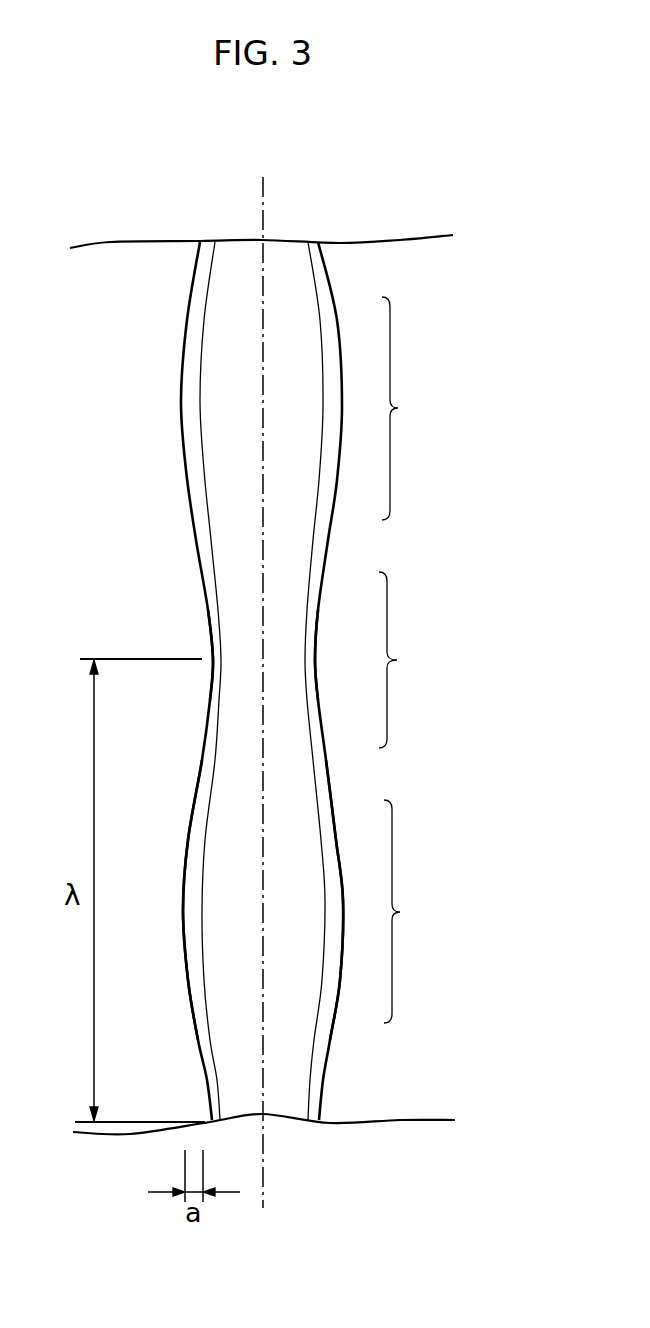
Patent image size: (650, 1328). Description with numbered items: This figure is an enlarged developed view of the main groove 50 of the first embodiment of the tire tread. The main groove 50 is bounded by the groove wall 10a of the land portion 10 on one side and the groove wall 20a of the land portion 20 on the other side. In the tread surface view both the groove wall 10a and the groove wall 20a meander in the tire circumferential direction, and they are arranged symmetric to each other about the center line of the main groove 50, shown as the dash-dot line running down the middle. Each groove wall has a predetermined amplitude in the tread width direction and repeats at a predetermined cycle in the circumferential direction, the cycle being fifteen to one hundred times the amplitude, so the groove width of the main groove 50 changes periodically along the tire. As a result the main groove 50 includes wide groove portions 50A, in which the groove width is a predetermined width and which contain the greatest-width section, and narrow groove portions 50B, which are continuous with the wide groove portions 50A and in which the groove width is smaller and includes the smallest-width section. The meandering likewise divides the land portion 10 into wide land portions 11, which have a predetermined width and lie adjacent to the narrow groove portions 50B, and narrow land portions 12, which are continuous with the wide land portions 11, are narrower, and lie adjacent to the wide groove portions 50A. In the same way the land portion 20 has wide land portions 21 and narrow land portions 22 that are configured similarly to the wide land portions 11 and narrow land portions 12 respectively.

The land portion 10 is at (154, 653).
The groove wall 10a is at (191, 402).
The wide land portion 11 is at (212, 638).
The narrow land portion 12 is at (183, 882).
The land portion 20 is at (370, 655).
The groove wall 20a is at (323, 298).
The wide land portion 21 is at (312, 630).
The narrow land portion 22 is at (332, 950).
The main groove 50 is at (300, 208).
The wide groove portion 50A is at (420, 660).
The narrow groove portion 50B is at (418, 660).